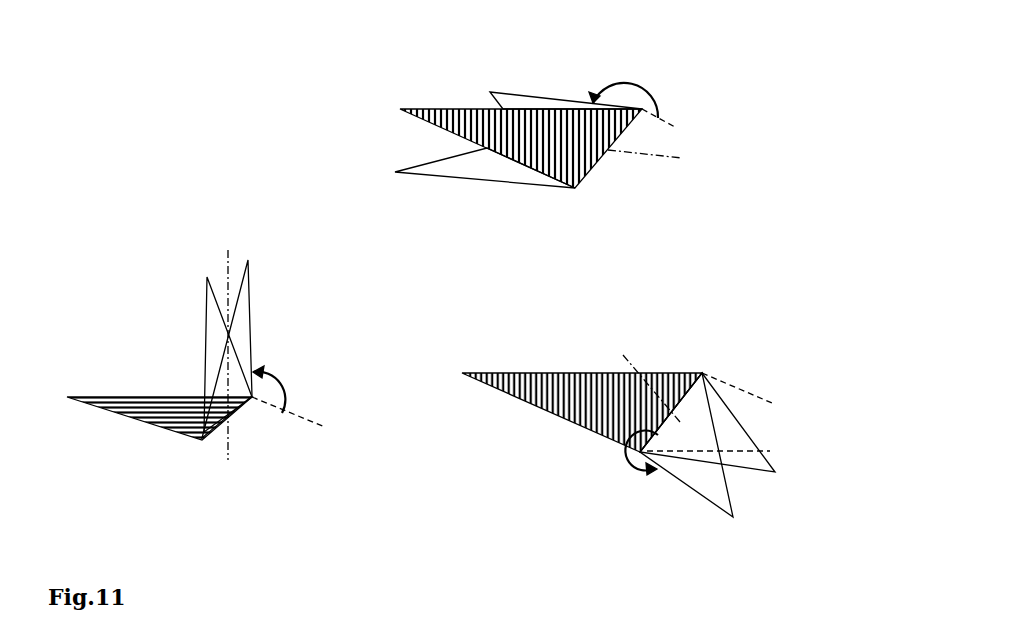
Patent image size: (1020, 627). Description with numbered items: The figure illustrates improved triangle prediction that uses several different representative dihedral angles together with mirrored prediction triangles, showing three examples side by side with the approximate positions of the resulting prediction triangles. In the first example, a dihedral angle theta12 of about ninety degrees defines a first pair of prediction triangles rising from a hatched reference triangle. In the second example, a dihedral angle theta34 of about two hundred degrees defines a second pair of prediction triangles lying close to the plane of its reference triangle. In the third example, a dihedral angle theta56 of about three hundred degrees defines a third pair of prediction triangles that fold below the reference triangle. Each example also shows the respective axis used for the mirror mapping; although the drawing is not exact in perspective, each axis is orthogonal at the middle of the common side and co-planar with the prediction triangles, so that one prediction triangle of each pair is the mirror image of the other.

The dihedral angle theta34 is at (643, 105).
The dihedral angle theta12 is at (288, 396).
The dihedral angle theta56 is at (672, 424).